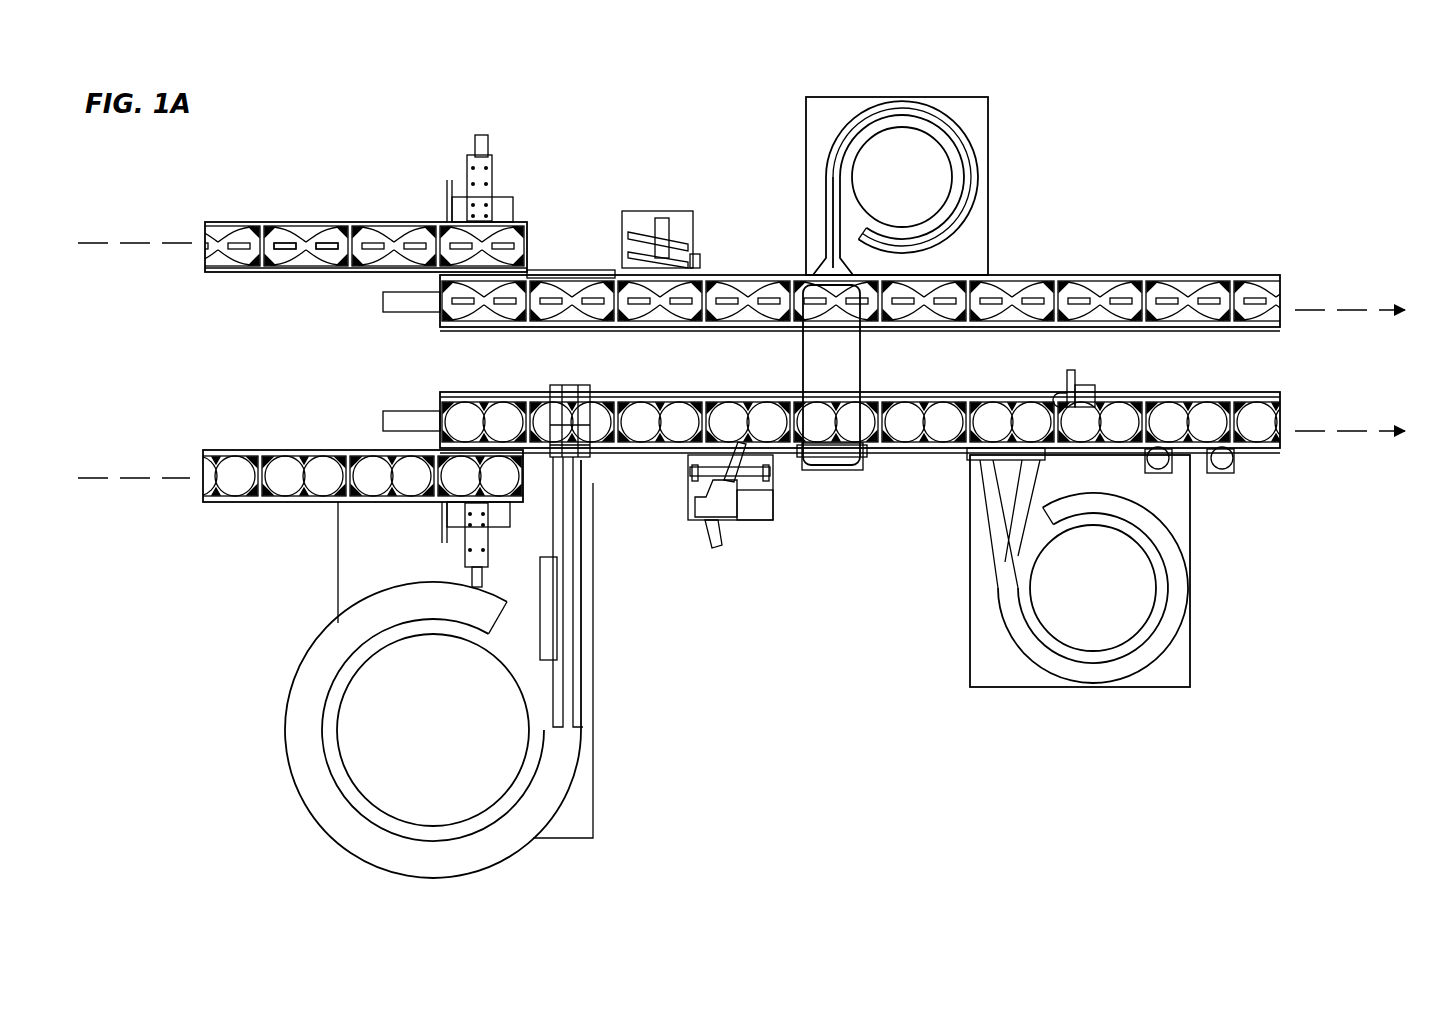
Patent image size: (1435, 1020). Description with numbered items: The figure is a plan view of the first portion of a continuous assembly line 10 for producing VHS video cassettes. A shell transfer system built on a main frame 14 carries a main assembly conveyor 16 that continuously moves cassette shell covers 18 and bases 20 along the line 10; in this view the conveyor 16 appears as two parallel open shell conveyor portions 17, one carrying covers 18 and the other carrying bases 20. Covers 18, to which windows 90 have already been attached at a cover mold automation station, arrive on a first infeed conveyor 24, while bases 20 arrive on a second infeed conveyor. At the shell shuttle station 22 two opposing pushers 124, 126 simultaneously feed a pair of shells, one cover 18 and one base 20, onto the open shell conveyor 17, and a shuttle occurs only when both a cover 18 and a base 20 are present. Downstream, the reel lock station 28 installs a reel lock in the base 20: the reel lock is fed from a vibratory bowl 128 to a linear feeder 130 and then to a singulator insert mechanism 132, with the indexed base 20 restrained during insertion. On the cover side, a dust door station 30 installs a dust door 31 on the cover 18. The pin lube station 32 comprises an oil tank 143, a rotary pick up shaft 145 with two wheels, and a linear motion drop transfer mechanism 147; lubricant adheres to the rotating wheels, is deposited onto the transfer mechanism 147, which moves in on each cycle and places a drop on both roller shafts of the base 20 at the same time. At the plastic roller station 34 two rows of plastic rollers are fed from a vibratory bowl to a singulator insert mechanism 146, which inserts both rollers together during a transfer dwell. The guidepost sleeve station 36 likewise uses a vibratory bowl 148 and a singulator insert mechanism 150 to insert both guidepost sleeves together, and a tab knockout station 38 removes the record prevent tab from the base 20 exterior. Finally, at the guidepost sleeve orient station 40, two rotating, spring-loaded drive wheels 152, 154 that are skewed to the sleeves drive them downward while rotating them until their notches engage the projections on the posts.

The assembly line 10 is at (899, 758).
The main frame 14 is at (663, 325).
The main assembly conveyor 16 is at (1138, 338).
The open shell conveyor portion 17 is at (525, 300).
The shell cover 18 is at (330, 238).
The shell base 20 is at (462, 420).
The shell shuttle station 22 is at (553, 200).
The first infeed conveyor 24 is at (203, 258).
The reel lock station 28 is at (612, 785).
The dust door station 30 is at (683, 222).
The dust door 31 is at (700, 266).
The pin lube station 32 is at (745, 567).
The plastic roller station 34 is at (1000, 187).
The guidepost sleeve station 36 is at (938, 632).
The tab knockout station 38 is at (1085, 393).
The guidepost sleeve orient station 40 is at (1220, 510).
The window 90 is at (250, 242).
The pusher 124 is at (484, 187).
The pusher 126 is at (465, 535).
The vibratory bowl 128 is at (368, 795).
The linear feeder 130 is at (570, 628).
The singulator insert mechanism 132 is at (570, 400).
The oil tank 143 is at (758, 510).
The rotary pick up shaft 145 is at (688, 482).
The singulator insert mechanism 146 is at (822, 465).
The linear motion drop transfer mechanism 147 is at (712, 530).
The vibratory bowl 148 is at (1155, 585).
The singulator insert mechanism 150 is at (1040, 456).
The drive wheel 152 is at (1165, 468).
The drive wheel 154 is at (1222, 470).